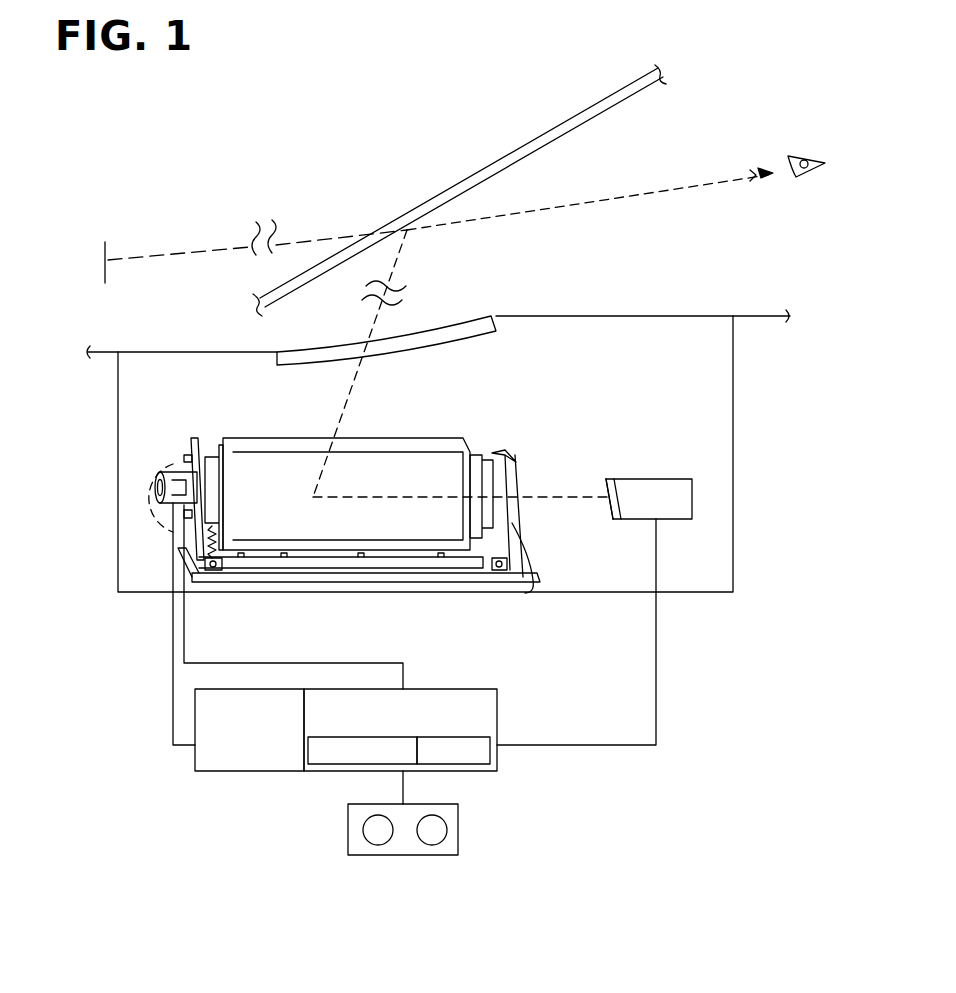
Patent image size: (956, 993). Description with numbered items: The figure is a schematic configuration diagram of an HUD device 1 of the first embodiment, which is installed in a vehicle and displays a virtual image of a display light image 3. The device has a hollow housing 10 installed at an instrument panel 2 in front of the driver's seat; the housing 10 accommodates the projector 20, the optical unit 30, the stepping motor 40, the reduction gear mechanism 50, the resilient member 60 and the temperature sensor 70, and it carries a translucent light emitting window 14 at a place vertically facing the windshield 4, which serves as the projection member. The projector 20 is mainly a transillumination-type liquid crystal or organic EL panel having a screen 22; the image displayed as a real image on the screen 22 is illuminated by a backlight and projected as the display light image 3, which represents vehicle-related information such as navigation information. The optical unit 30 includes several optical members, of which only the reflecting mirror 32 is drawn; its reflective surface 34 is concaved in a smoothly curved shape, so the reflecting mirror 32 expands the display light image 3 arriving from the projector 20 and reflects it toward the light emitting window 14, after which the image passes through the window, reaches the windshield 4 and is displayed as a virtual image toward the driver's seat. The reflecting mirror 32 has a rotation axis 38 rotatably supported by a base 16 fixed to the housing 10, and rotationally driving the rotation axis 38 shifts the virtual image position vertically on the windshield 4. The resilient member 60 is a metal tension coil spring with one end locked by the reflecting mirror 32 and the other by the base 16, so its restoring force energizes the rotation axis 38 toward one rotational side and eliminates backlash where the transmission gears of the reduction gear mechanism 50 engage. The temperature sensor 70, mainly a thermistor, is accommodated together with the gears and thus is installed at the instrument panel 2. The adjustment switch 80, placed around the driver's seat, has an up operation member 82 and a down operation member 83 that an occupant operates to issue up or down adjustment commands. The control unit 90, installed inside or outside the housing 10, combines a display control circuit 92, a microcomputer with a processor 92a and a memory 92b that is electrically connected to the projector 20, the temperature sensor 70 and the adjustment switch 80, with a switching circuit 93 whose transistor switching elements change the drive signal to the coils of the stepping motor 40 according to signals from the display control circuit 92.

The HUD device 1 is at (754, 595).
The instrument panel 2 is at (763, 316).
The display light image 3 is at (108, 258).
The windshield 4 is at (583, 120).
The housing 10 is at (735, 374).
The light emitting window 14 is at (483, 318).
The base 16 is at (500, 585).
The projector 20 is at (692, 497).
The screen 22 is at (613, 521).
The optical unit 30 is at (308, 566).
The reflecting mirror 32 is at (346, 471).
The reflective surface 34 is at (282, 526).
The rotation axis 38 is at (512, 456).
The stepping motor 40 is at (178, 470).
The reduction gear mechanism 50 is at (157, 484).
The resilient member 60 is at (230, 560).
The temperature sensor 70 is at (178, 503).
The adjustment switch 80 is at (446, 835).
The up operation member 82 is at (378, 848).
The down operation member 83 is at (462, 829).
The control unit 90 is at (372, 780).
The display control circuit 92 is at (401, 761).
The processor 92a is at (405, 766).
The memory 92b is at (465, 767).
The switching circuit 93 is at (236, 774).